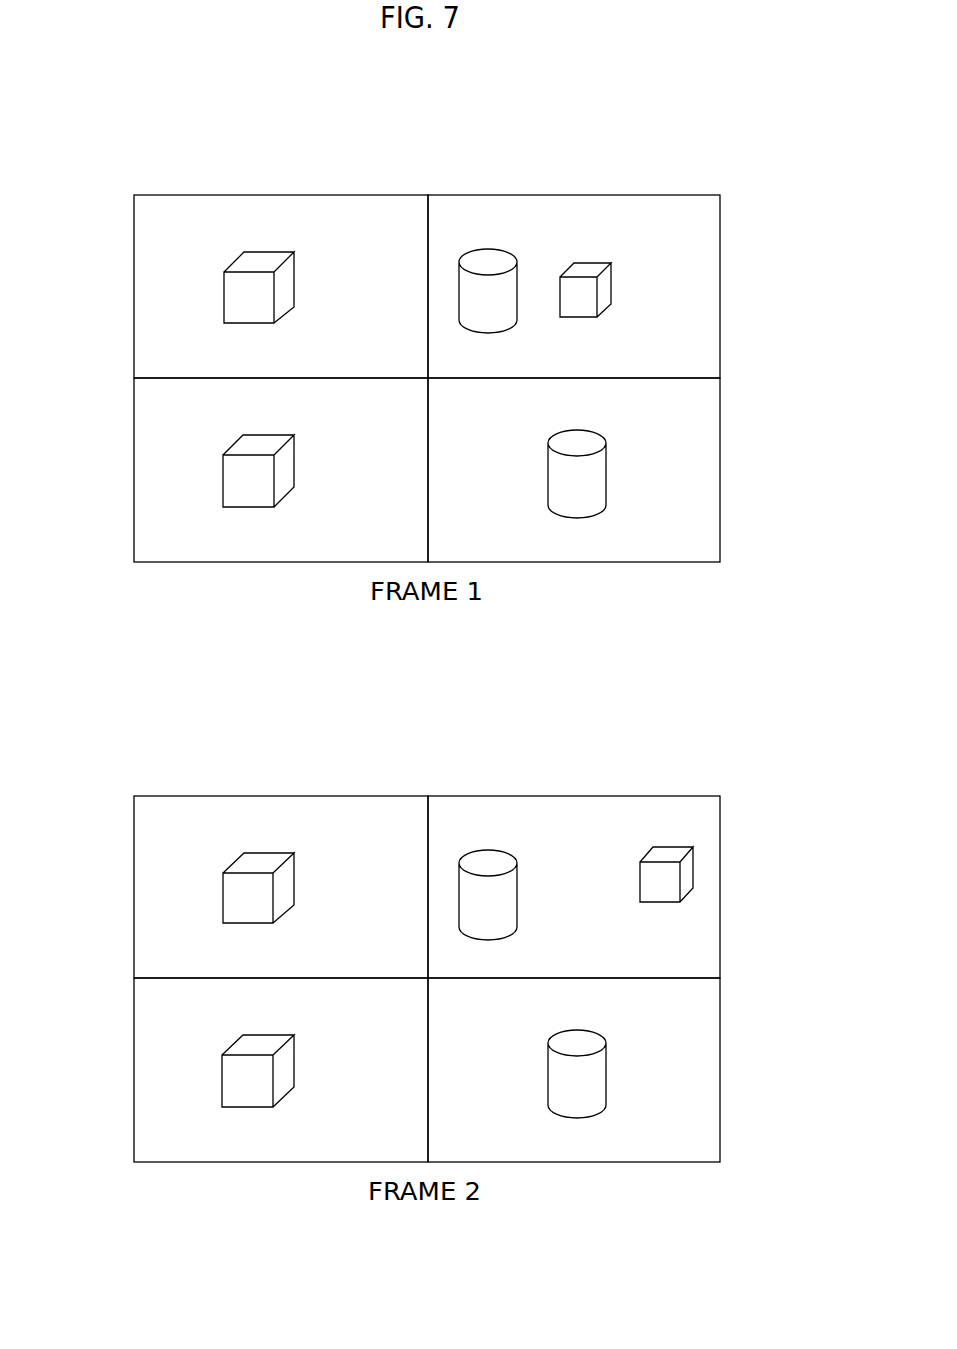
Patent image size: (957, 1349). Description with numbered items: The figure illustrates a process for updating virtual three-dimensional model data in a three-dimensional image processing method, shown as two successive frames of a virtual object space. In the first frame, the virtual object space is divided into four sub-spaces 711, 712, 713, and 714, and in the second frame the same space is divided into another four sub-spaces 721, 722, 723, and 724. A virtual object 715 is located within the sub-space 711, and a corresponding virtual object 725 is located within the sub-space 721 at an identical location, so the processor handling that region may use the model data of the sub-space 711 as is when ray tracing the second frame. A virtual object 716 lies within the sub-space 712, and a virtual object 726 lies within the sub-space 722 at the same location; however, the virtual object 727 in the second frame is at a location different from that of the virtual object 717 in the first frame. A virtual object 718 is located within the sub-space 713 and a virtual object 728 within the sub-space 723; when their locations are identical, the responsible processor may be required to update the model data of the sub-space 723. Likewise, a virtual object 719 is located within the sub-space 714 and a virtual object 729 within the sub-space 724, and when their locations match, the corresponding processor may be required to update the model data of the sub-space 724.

The sub-space 711 is at (256, 195).
The sub-space 712 is at (588, 196).
The sub-space 713 is at (257, 563).
The sub-space 714 is at (588, 563).
The virtual object 715 is at (224, 297).
The virtual object 716 is at (487, 250).
The virtual object 717 is at (611, 282).
The virtual object 718 is at (223, 478).
The virtual object 719 is at (606, 472).
The sub-space 721 is at (254, 796).
The sub-space 722 is at (590, 797).
The sub-space 723 is at (257, 1163).
The sub-space 724 is at (588, 1163).
The virtual object 725 is at (223, 897).
The virtual object 726 is at (487, 850).
The virtual object 727 is at (682, 863).
The virtual object 728 is at (222, 1078).
The virtual object 729 is at (606, 1072).